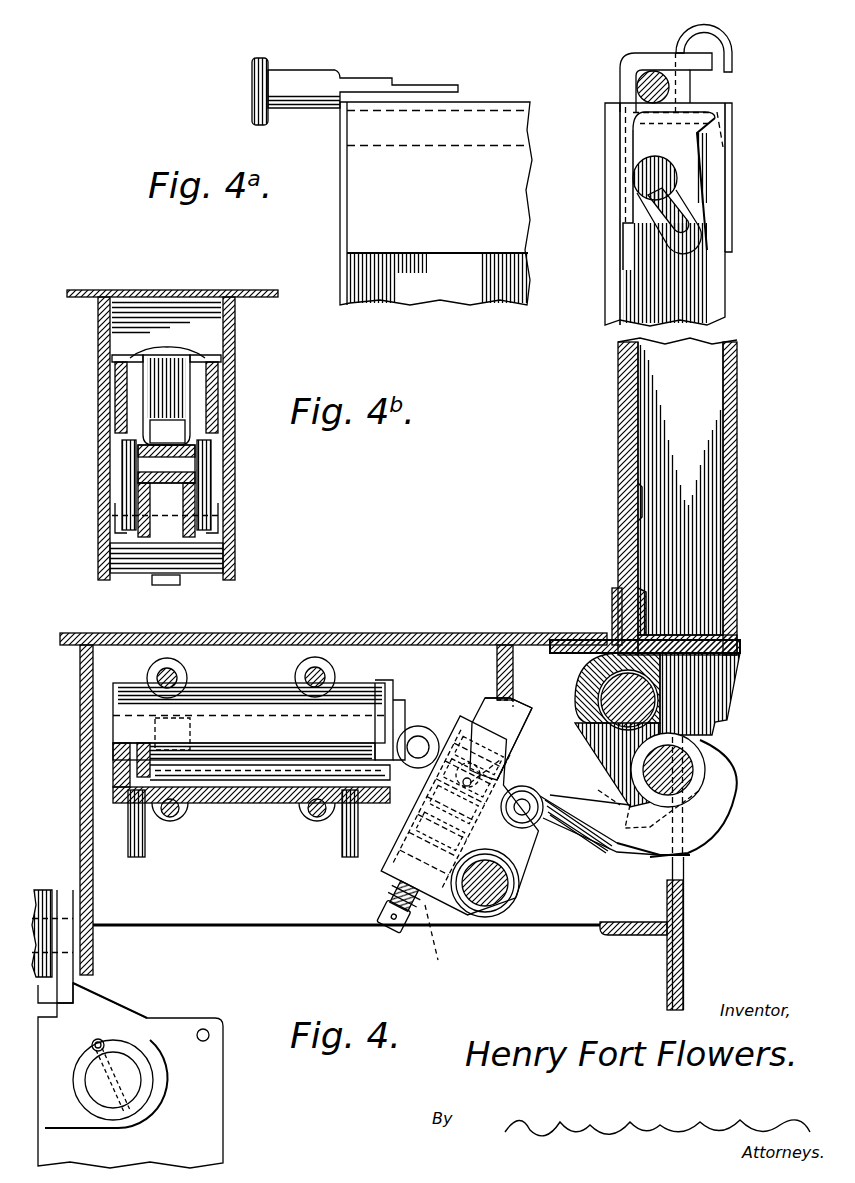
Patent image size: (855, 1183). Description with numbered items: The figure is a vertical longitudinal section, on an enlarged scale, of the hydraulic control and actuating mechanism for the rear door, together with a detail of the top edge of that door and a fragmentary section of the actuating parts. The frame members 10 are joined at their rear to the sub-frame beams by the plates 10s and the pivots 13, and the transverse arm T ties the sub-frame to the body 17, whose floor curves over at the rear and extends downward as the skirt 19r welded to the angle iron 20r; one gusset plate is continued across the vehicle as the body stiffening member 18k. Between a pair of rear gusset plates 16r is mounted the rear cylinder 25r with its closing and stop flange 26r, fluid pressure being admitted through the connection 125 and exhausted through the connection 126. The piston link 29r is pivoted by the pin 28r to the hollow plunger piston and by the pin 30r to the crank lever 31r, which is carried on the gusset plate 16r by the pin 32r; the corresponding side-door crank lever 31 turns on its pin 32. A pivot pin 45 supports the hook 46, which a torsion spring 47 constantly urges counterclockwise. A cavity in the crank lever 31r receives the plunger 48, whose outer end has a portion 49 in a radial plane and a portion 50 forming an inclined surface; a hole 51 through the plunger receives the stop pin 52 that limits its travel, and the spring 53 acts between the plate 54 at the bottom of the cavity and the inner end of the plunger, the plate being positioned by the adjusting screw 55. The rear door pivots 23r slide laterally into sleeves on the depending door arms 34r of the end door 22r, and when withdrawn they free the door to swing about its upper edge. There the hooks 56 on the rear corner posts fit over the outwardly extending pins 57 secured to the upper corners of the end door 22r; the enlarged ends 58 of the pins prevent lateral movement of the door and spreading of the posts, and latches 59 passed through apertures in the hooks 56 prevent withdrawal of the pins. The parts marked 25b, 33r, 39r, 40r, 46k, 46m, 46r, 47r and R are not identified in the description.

In FIG. 4, the frame members 10 is at (196, 1010).
In FIG. 4, the plates 10s is at (93, 1012).
In FIG. 4, the pivots 13 is at (132, 1085).
In FIG. 4, the rear gusset plates 16r is at (253, 653).
In FIG. 4B, the body 17 is at (254, 291).
In FIG. 4, the body 17 is at (440, 640).
In FIG. 4, the body stiffening member 18k is at (80, 752).
In FIG. 4, the rear skirt 19r is at (684, 941).
In FIG. 4, the angle iron 20r is at (660, 934).
In FIG. 4A, the end door 22r is at (353, 226).
In FIG. 4, the end door 22r is at (628, 430).
In FIG. 4, the rear door pivots 23r is at (612, 688).
In FIG. 4, the rear cylinders 25r is at (226, 803).
In FIG. 4, the mounting lugs 25b is at (162, 672).
In FIG. 4, the closing and stop flanges 26r is at (412, 812).
In FIG. 4, the pins 28r is at (200, 757).
In FIG. 4, the piston links 29r is at (310, 755).
In FIG. 4, the pins 30r is at (420, 733).
In FIG. 4B, the crank lever 31 is at (137, 535).
In FIG. 4, the crank lever 31r is at (522, 868).
In FIG. 4B, the pin 32 is at (170, 525).
In FIG. 4, the pin 32r is at (493, 905).
In FIG. 4, the pivot pin 33r is at (705, 782).
In FIG. 4B, the depending door arms 34r is at (120, 398).
In FIG. 4, the depending door arms 34r is at (697, 730).
In FIG. 4B, the hanger 39r is at (120, 330).
In FIG. 4, the hanger 39r is at (497, 660).
In FIG. 4B, the lever plate 40r is at (120, 360).
In FIG. 4, the lever plate 40r is at (605, 808).
In FIG. 4B, the pivot pin 45 is at (195, 463).
In FIG. 4, the hook 46 is at (653, 848).
In FIG. 4, the arm pivot 46k is at (527, 798).
In FIG. 4, the arm portion 46m is at (613, 850).
In FIG. 4B, the bracket 46r is at (207, 495).
In FIG. 4, the torsion spring 47 is at (617, 852).
In FIG. 4B, the bracket 47r is at (125, 495).
In FIG. 4B, the plunger 48 is at (180, 388).
In FIG. 4, the plunger 48 is at (510, 755).
In FIG. 4B, the portion 49 is at (185, 350).
In FIG. 4, the portion 49 is at (525, 710).
In FIG. 4B, the portion 50 is at (173, 355).
In FIG. 4, the portion 50 is at (487, 698).
In FIG. 4, the hole 51 is at (466, 777).
In FIG. 4, the stop pin 52 is at (472, 783).
In FIG. 4, the spring 53 is at (382, 862).
In FIG. 4, the plate 54 is at (418, 921).
In FIG. 4B, the adjusting screw 55 is at (165, 585).
In FIG. 4, the adjusting screw 55 is at (397, 920).
In FIG. 4, the hooks 56 is at (642, 65).
In FIG. 4A, the pins 57 is at (300, 80).
In FIG. 4, the pins 57 is at (637, 86).
In FIG. 4A, the enlarged ends 58 is at (252, 78).
In FIG. 4, the latches 59 is at (685, 38).
In FIG. 4, the connection 125 is at (343, 850).
In FIG. 4, the connection 126 is at (137, 858).
In FIG. 4, the roller R is at (697, 258).
In FIG. 4, the transverse arm T is at (47, 890).